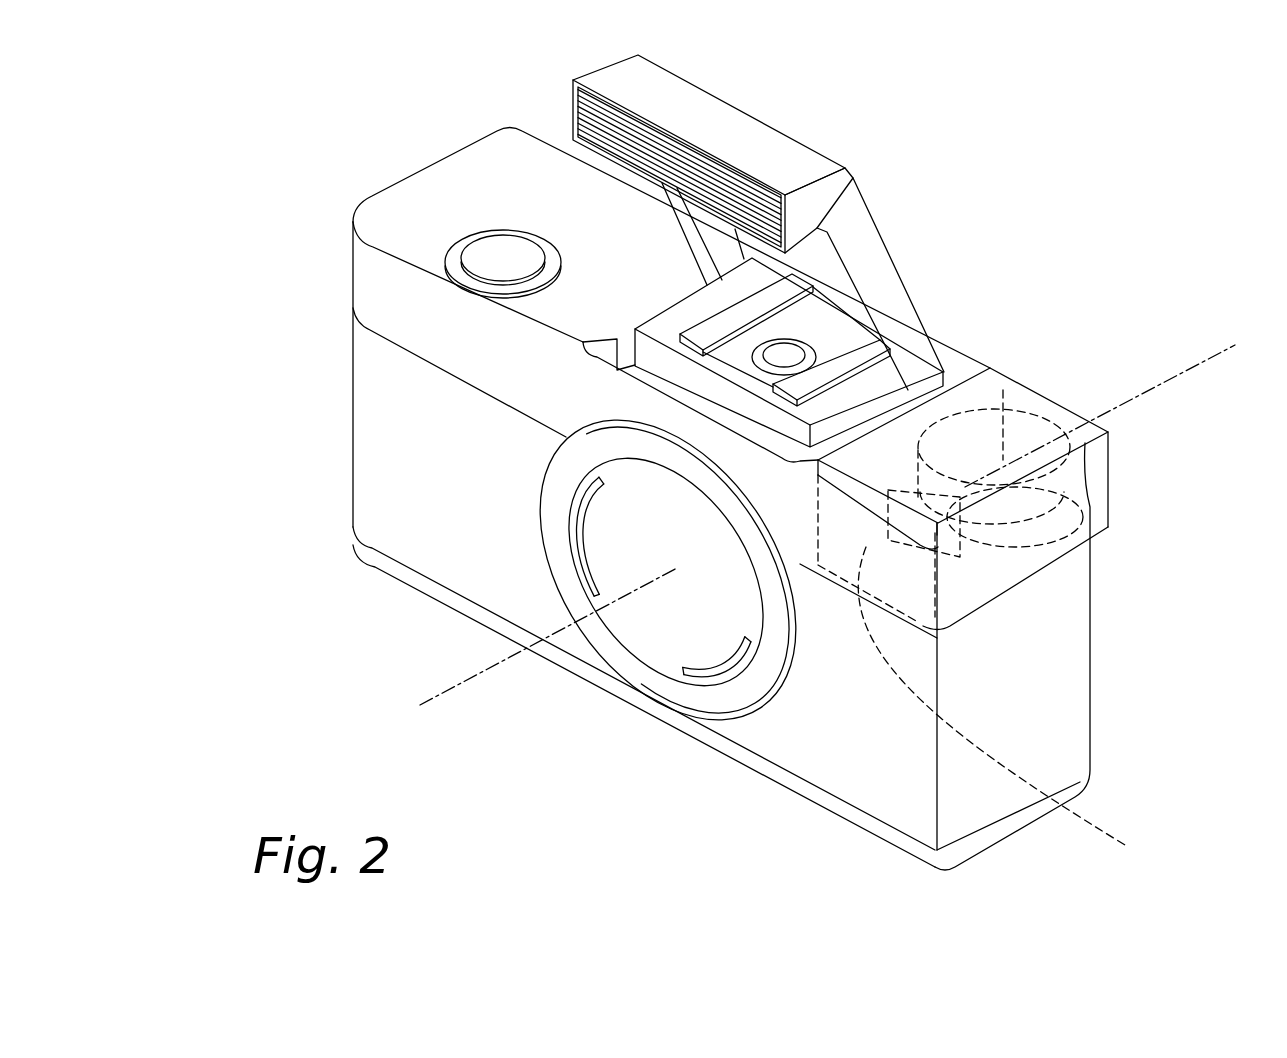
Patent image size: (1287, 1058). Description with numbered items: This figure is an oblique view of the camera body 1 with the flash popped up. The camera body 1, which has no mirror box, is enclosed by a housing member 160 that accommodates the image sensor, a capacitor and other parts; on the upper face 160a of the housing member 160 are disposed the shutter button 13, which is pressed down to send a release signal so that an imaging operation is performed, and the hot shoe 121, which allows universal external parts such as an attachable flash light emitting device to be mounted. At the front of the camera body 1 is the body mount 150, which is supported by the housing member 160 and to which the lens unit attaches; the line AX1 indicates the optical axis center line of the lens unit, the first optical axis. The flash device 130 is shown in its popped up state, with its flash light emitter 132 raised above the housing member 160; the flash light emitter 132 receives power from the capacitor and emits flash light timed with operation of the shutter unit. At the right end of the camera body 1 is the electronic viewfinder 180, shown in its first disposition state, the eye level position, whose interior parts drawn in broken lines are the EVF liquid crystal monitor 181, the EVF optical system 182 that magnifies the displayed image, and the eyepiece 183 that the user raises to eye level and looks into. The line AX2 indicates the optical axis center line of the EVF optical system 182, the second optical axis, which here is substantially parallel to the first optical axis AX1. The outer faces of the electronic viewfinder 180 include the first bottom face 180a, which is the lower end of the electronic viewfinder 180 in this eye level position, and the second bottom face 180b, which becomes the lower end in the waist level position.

The camera body 1 is at (377, 147).
The shutter button 13 is at (493, 248).
The hot shoe 121 is at (790, 287).
The flash device 130 is at (758, 204).
The flash light emitter 132 is at (647, 83).
The body mount 150 is at (600, 643).
The housing member 160 is at (1102, 690).
The upper face 160a is at (500, 183).
The electronic viewfinder 180 is at (1038, 563).
The first bottom face 180a is at (1013, 595).
The second bottom face 180b is at (1013, 716).
The EVF liquid crystal monitor 181 is at (955, 575).
The EVF optical system 182 is at (1048, 500).
The eyepiece 183 is at (1032, 388).
The optical axis of the lens unit AX1 is at (517, 651).
The optical axis of the EVF optical system AX2 is at (1077, 393).